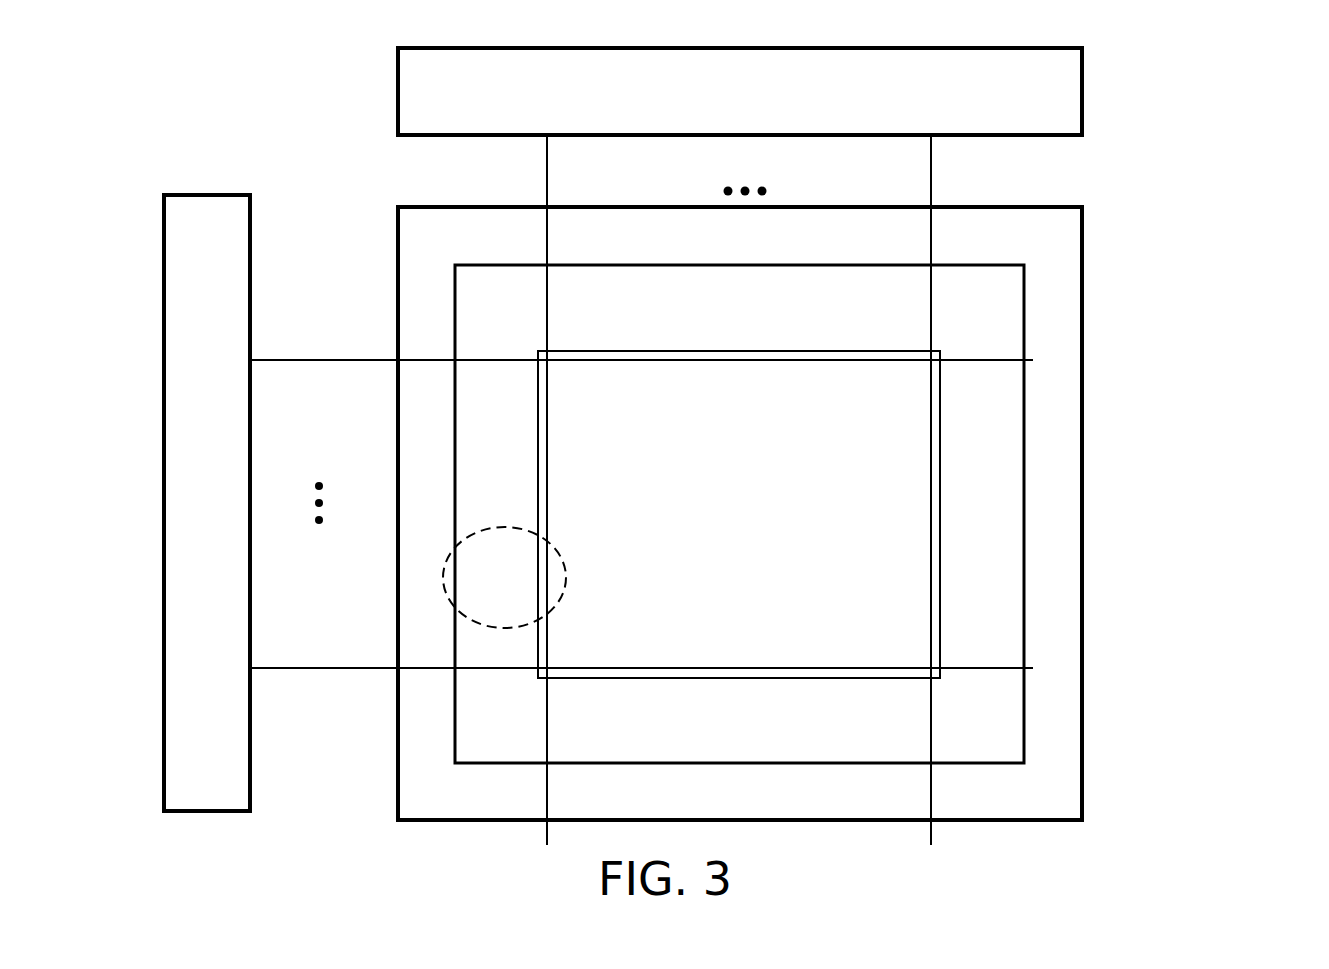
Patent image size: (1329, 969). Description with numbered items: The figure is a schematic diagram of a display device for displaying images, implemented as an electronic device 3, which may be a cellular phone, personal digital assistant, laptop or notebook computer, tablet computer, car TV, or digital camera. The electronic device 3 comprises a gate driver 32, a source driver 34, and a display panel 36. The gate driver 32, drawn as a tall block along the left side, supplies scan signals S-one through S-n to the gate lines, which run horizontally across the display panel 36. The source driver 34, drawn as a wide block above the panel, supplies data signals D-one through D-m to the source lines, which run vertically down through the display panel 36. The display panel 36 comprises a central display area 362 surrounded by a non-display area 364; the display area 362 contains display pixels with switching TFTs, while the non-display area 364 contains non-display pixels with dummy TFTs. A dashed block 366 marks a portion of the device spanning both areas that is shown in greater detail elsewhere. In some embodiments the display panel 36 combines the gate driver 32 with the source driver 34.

The electronic device 3 is at (1247, 138).
The gate driver 32 is at (205, 193).
The source driver 34 is at (1082, 90).
The display panel 36 is at (1082, 207).
The display area 362 is at (912, 513).
The non-display area 364 is at (995, 463).
The block 366 is at (567, 577).